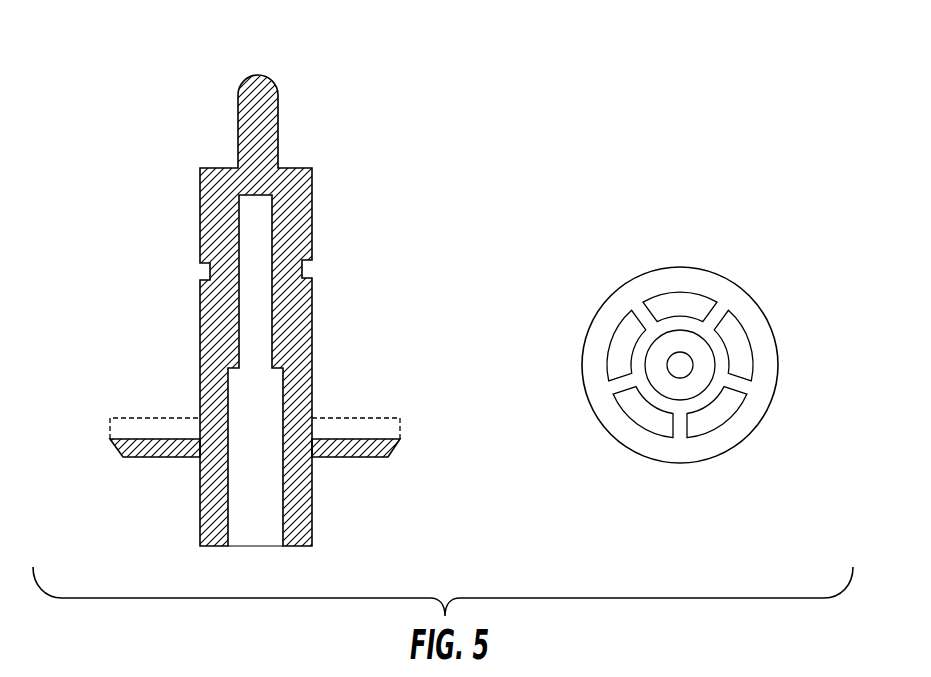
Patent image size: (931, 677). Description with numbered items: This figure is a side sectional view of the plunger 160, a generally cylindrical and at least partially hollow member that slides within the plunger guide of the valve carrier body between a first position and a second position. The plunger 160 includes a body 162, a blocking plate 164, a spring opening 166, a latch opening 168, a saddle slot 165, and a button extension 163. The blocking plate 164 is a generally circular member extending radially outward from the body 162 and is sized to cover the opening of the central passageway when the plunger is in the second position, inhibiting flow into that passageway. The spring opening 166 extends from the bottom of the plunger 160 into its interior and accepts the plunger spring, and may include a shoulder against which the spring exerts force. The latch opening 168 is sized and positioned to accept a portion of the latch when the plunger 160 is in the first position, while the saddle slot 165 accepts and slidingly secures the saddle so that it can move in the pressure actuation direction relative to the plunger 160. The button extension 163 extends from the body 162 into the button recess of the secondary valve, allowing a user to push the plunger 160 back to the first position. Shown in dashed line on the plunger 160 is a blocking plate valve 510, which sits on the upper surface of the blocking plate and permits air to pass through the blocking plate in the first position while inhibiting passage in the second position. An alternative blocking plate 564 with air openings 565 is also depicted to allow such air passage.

The plunger 160 is at (343, 82).
The body 162 is at (312, 246).
The button extension 163 is at (279, 125).
The blocking plate 164 is at (388, 450).
The saddle slot 165 is at (208, 273).
The spring opening 166 is at (257, 510).
The latch opening 168 is at (306, 273).
The blocking plate valve 510 is at (357, 418).
The blocking plate 564 is at (662, 370).
The slots 565 is at (728, 330).